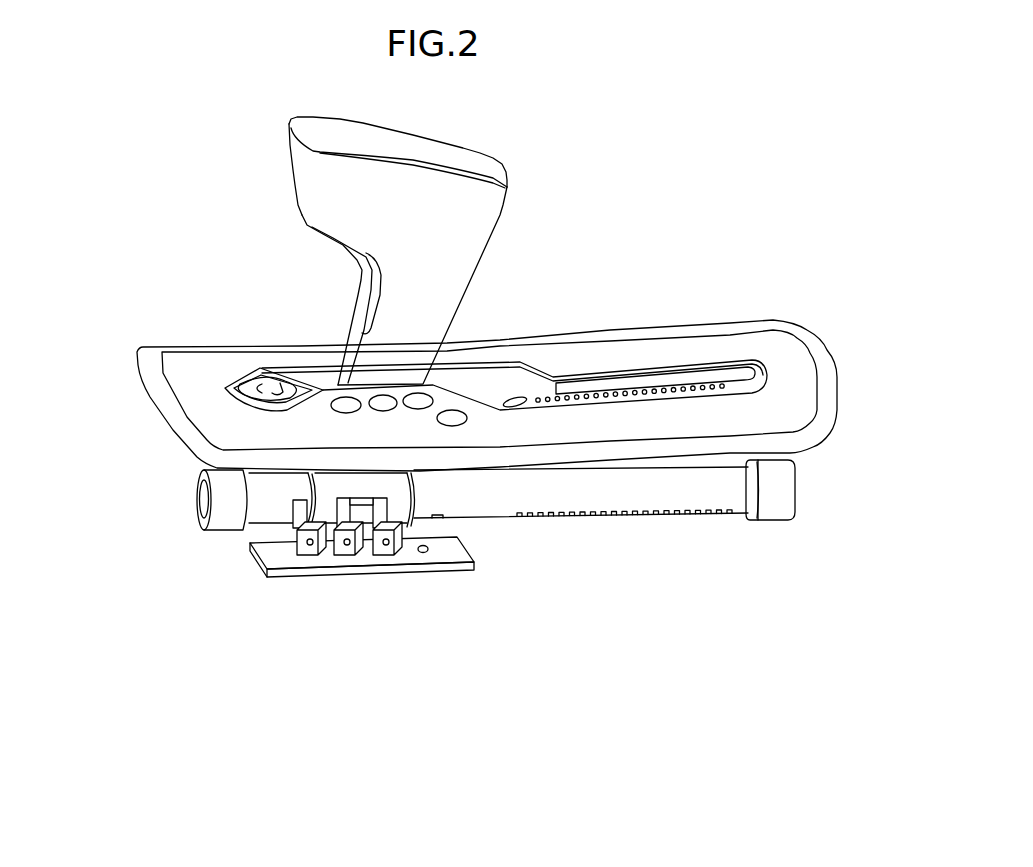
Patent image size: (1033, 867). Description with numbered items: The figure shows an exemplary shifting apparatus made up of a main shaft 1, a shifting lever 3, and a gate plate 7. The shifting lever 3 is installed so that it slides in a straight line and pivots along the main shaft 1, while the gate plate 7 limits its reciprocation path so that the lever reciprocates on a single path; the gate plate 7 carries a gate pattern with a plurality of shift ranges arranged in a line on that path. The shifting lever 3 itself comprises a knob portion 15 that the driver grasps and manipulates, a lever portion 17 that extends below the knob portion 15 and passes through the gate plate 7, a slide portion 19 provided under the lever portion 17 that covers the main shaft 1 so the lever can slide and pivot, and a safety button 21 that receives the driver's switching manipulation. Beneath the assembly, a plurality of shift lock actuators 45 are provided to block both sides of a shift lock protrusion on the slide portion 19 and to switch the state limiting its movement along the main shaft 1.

The main shaft 1 is at (627, 490).
The shifting lever 3 is at (100, 125).
The gate plate 7 is at (647, 355).
The knob portion 15 is at (368, 200).
The lever portion 17 is at (391, 348).
The slide portion 19 is at (343, 487).
The safety button 21 is at (348, 251).
The shift lock actuators 45 is at (310, 548).